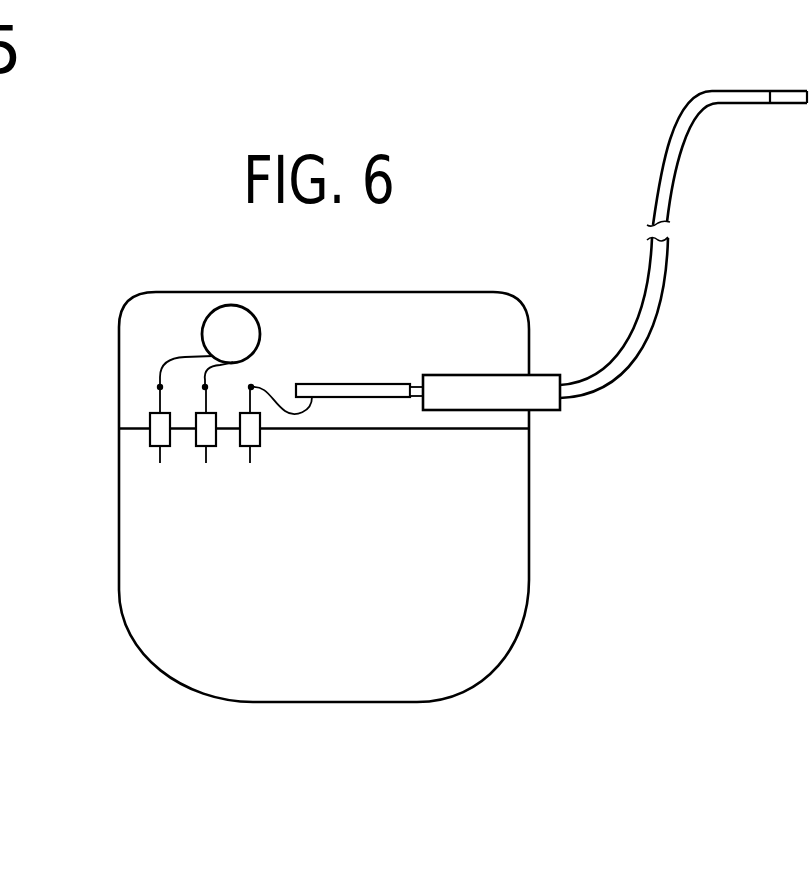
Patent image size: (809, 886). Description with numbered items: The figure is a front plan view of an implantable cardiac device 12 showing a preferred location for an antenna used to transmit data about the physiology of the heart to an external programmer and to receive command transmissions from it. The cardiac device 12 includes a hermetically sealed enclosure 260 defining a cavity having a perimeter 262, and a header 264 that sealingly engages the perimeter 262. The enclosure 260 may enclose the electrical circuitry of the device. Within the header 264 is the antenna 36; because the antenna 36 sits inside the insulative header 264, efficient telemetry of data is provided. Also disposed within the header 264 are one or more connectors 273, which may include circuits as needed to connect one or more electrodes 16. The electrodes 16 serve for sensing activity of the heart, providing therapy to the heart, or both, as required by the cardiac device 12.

The implantable cardiac device 12 is at (447, 713).
The electrodes 16 is at (780, 90).
The antenna 36 is at (258, 315).
The hermetically sealed enclosure 260 is at (147, 535).
The perimeter 262 is at (500, 430).
The header 264 is at (382, 312).
The connectors 273 is at (383, 383).